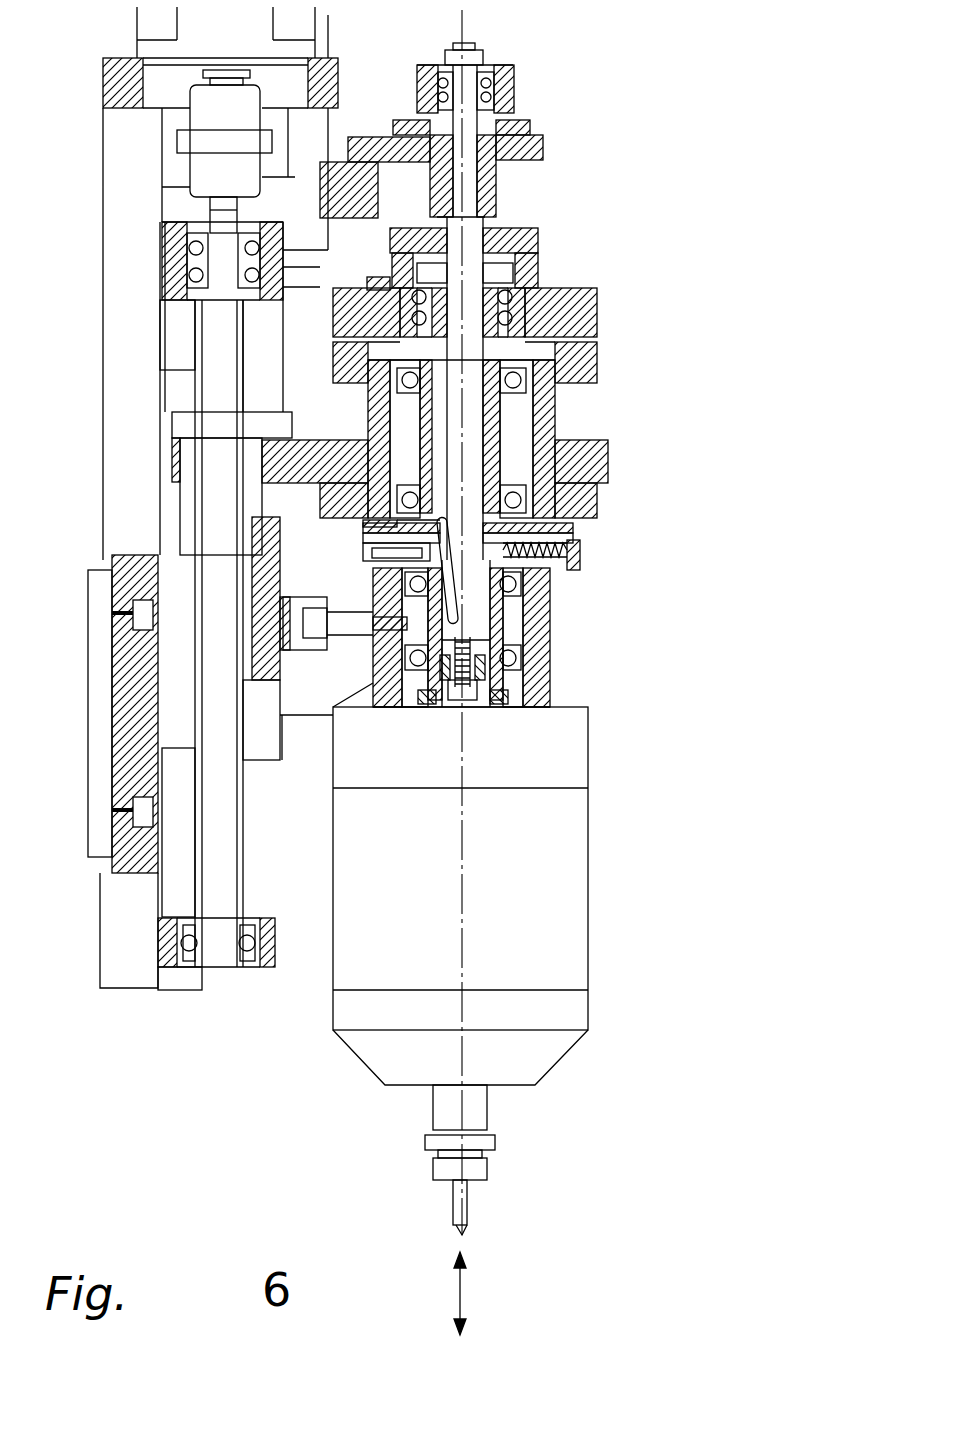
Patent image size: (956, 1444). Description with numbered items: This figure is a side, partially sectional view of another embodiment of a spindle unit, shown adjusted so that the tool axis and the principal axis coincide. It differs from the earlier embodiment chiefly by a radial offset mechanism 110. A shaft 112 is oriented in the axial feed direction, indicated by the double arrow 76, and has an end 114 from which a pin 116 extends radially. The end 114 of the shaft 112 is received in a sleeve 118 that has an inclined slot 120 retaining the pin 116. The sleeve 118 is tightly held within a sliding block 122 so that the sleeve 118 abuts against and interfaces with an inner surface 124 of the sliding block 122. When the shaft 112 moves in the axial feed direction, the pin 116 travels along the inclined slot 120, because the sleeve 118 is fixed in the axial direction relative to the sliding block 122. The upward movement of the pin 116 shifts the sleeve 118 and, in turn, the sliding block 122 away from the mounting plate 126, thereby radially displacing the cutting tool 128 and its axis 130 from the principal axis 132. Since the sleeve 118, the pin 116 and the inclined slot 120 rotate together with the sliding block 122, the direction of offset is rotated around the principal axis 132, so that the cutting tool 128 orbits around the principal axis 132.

The double arrow 76 is at (460, 1290).
The radial offset mechanism 110 is at (652, 688).
The shaft 112 is at (592, 350).
The end 114 is at (522, 585).
The pin 116 is at (488, 620).
The sleeve 118 is at (486, 598).
The inclined slot 120 is at (420, 565).
The sliding block 122 is at (527, 522).
The inner surface 124 is at (405, 528).
The mounting plate 126 is at (120, 388).
The cutting tool 128 is at (468, 1205).
The axis 130 is at (462, 916).
The principal axis 132 is at (467, 210).